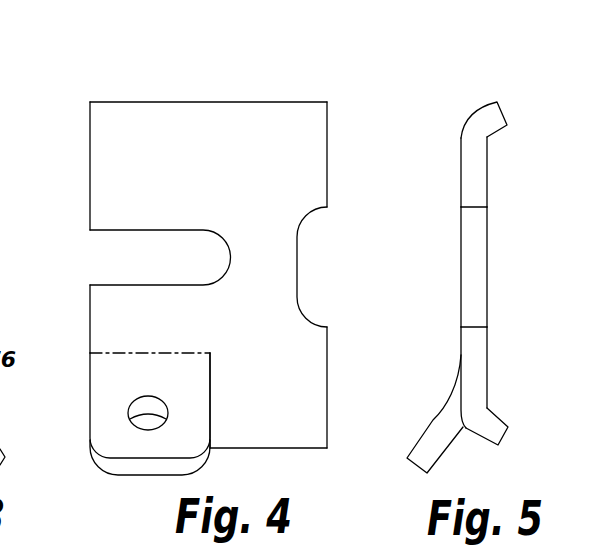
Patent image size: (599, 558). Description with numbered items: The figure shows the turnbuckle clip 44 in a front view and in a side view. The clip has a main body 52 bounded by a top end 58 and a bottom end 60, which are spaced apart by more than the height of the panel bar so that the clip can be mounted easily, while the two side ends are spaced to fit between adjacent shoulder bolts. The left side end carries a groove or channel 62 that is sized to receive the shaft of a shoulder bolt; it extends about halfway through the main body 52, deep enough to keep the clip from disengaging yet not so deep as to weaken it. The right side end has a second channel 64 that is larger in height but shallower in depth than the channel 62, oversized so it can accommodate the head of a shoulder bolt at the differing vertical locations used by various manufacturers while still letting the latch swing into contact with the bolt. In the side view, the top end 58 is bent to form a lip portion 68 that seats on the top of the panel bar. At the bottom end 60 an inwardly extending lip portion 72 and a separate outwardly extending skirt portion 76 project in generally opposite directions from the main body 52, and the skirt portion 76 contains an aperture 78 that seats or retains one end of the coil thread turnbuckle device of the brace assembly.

In FIG. 4, the turnbuckle clip 44 is at (337, 88).
In FIG. 5, the turnbuckle clip 44 is at (516, 186).
In FIG. 4, the main body 52 is at (215, 178).
In FIG. 4, the top end 58 is at (180, 102).
In FIG. 4, the bottom end 60 is at (270, 448).
In FIG. 4, the channel 62 is at (117, 258).
In FIG. 4, the channel 64 is at (308, 268).
In FIG. 5, the channel 64 is at (475, 270).
In FIG. 5, the lip portion 68 is at (500, 110).
In FIG. 5, the lip portion 72 is at (508, 430).
In FIG. 4, the skirt portion 76 is at (90, 412).
In FIG. 5, the skirt portion 76 is at (433, 425).
In FIG. 4, the aperture 78 is at (148, 417).